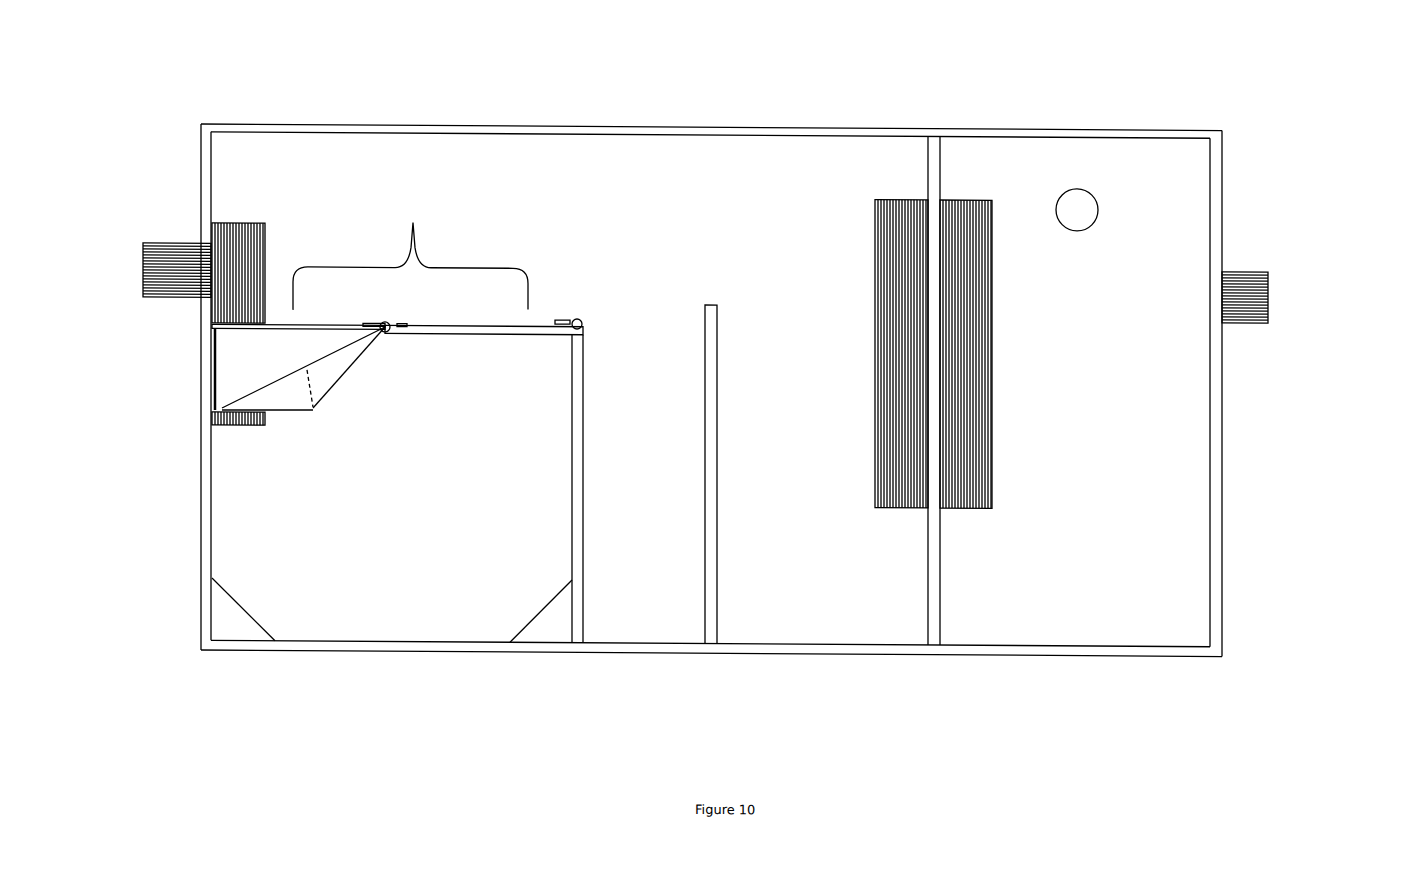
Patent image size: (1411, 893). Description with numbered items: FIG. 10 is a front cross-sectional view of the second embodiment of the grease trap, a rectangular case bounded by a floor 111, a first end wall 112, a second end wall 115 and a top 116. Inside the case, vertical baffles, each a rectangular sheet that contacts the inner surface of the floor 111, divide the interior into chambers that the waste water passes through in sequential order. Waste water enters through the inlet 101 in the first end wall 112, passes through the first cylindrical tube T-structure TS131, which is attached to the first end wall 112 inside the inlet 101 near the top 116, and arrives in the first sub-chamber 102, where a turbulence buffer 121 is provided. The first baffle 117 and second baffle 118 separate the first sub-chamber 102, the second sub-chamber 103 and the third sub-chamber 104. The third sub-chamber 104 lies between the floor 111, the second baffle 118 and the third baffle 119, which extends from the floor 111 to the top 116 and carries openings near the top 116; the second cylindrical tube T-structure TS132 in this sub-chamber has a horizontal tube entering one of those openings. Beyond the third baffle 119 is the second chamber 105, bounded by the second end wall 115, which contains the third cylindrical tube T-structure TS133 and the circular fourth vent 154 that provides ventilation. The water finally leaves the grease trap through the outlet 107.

The inlet 101 is at (160, 264).
The first sub-chamber 102 is at (407, 599).
The second sub-chamber 103 is at (638, 561).
The third sub-chamber 104 is at (828, 573).
The second chamber 105 is at (1124, 593).
The outlet 107 is at (1237, 294).
The floor 111 is at (298, 643).
The first end wall 112 is at (208, 526).
The second end wall 115 is at (1213, 450).
The top 116 is at (485, 127).
The first baffle 117 is at (580, 379).
The second baffle 118 is at (712, 313).
The third baffle 119 is at (935, 179).
The turbulence buffer 121 is at (397, 308).
The first cylindrical tube T-structure TS131 is at (255, 205).
The second cylindrical tube T-structure TS132 is at (910, 186).
The third cylindrical tube T-structure TS133 is at (1003, 192).
The fourth vent 154 is at (1073, 206).